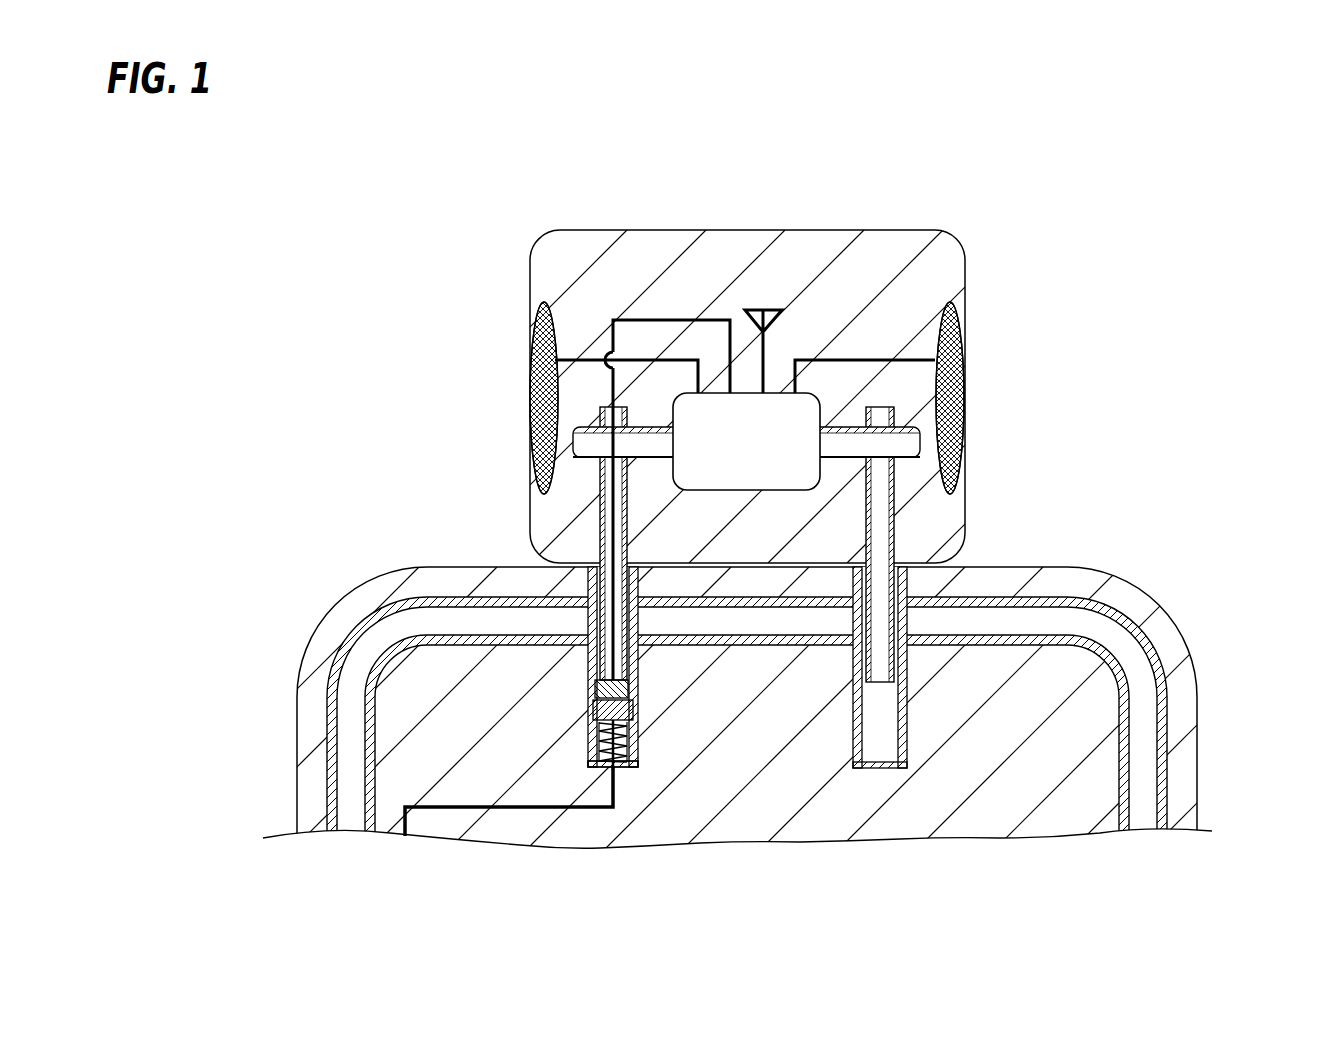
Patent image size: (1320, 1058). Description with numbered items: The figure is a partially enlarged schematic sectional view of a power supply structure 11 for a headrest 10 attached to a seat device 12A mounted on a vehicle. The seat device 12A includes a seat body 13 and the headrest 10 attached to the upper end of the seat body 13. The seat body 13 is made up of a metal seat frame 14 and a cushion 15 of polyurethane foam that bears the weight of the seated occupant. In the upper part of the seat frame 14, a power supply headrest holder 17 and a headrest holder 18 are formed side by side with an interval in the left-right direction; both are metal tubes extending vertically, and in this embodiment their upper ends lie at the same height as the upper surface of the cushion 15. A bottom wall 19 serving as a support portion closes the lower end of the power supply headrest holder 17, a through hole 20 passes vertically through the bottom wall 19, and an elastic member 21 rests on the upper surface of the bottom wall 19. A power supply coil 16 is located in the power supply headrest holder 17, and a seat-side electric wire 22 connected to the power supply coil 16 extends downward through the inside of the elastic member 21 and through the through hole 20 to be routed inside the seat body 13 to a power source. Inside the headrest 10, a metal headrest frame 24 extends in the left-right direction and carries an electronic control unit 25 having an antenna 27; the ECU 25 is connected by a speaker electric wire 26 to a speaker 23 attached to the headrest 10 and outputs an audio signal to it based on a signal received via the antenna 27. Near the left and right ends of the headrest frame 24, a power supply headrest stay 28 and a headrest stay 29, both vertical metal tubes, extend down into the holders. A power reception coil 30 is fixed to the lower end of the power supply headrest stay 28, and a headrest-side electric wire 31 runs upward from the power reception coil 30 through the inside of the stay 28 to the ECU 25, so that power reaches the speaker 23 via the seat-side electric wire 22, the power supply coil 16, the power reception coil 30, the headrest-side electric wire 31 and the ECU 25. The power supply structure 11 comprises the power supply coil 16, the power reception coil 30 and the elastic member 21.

The headrest 10 is at (948, 262).
The power supply structure 11 is at (270, 530).
The seat device 12A is at (1245, 392).
The seat body 13 is at (1215, 483).
The seat frame 14 is at (1120, 625).
The cushion 15 is at (1090, 583).
The power supply coil 16 is at (600, 710).
The power supply headrest holder 17 is at (590, 622).
The headrest holder 18 is at (907, 687).
The bottom wall 19 is at (597, 768).
The through hole 20 is at (618, 768).
The elastic member 21 is at (592, 745).
The seat-side electric wire 22 is at (447, 797).
The speaker 23 is at (532, 347).
The headrest frame 24 is at (918, 428).
The electronic control unit (ECU) 25 is at (808, 410).
The speaker electric wire 26 is at (588, 360).
The antenna 27 is at (768, 352).
The power supply headrest stay 28 is at (598, 508).
The headrest stay 29 is at (895, 490).
The power reception coil 30 is at (592, 683).
The headrest-side electric wire 31 is at (661, 320).